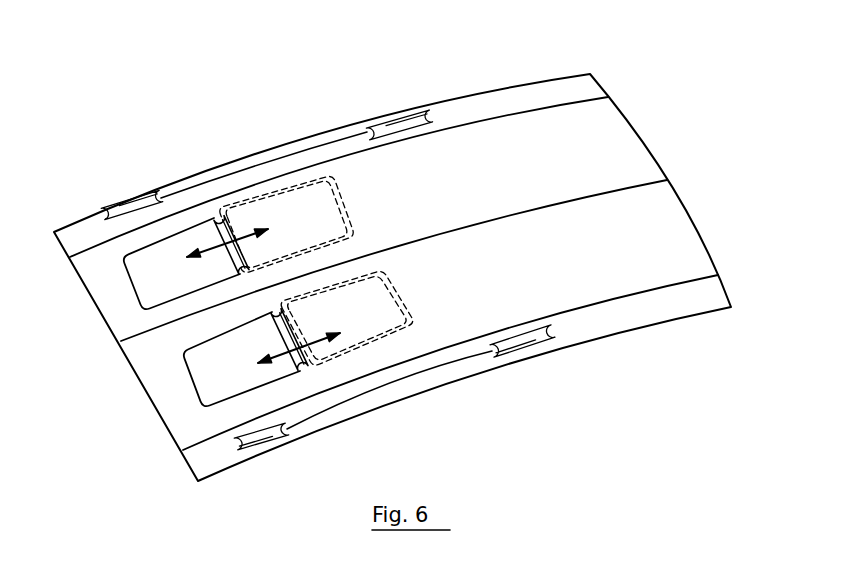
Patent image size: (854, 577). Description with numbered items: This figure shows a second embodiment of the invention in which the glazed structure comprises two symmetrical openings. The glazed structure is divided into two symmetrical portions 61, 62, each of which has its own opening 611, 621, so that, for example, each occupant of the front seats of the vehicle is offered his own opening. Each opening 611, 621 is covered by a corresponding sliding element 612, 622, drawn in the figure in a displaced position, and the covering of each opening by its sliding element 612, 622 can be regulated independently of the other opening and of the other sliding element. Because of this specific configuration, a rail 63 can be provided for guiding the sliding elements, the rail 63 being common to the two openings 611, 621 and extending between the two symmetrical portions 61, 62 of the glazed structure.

The symmetrical portion 61 is at (590, 270).
The symmetrical portion 62 is at (452, 158).
The rail 63 is at (608, 185).
The opening 621 is at (161, 280).
The sliding element 622 is at (280, 190).
The opening 611 is at (228, 375).
The sliding element 612 is at (400, 348).